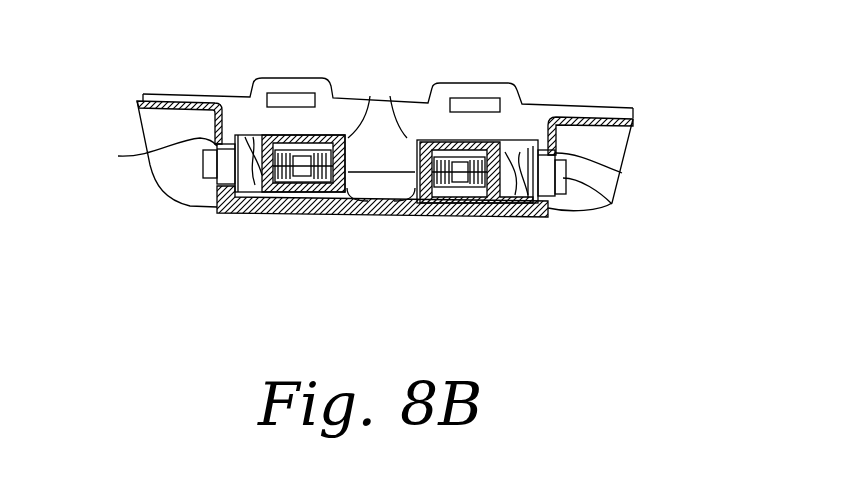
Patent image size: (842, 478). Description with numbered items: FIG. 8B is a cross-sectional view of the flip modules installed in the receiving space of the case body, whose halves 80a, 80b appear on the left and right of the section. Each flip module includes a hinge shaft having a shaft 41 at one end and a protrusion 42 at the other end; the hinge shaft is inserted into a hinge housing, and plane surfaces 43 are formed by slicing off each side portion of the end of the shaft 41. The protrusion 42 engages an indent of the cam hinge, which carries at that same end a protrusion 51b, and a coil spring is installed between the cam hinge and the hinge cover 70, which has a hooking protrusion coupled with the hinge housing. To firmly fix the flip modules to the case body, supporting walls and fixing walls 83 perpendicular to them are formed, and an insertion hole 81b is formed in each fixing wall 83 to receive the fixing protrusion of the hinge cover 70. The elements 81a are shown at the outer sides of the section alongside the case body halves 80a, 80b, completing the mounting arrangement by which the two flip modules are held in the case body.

The first housing half 80a is at (170, 95).
The second housing half 80b is at (597, 112).
The lead wire 81a is at (648, 175).
The insertion hole 81b is at (390, 95).
The protrusion 42 is at (245, 101).
The plane surface 43 is at (612, 204).
The shaft 41 is at (203, 181).
The protrusion 51b is at (253, 213).
The hinge cover 70 is at (392, 216).
The fixing wall 83 is at (366, 215).